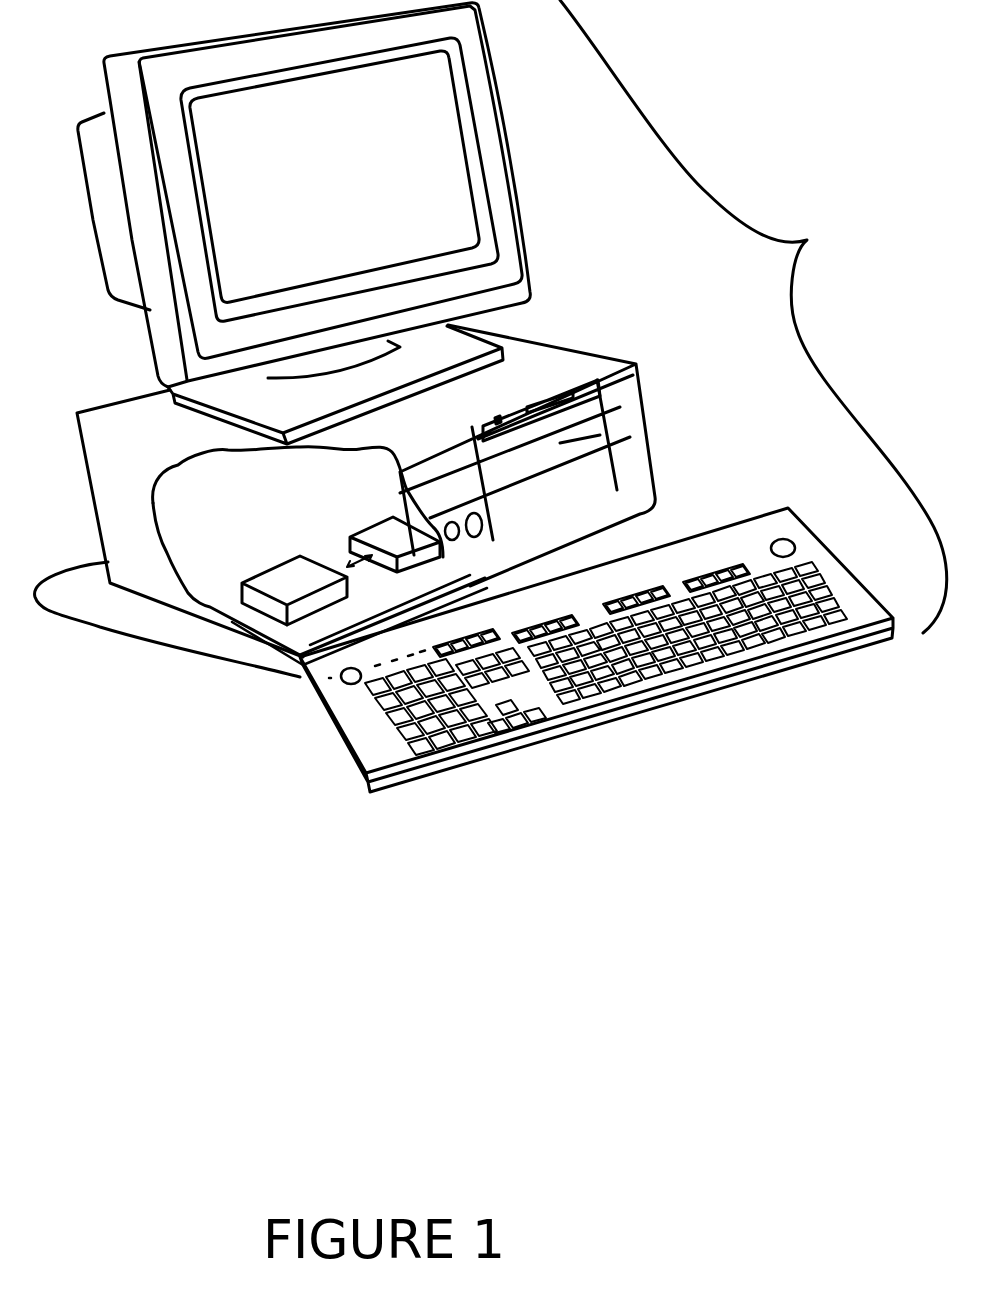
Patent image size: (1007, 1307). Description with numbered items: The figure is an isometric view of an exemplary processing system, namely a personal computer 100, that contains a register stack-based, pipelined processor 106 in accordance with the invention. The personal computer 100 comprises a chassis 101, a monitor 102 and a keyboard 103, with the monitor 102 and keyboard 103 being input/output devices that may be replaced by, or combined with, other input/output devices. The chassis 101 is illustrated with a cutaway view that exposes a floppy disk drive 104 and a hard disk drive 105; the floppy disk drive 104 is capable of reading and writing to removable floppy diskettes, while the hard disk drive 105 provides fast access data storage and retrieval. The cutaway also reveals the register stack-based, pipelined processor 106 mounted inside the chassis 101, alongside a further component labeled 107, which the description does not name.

The personal computer 100 is at (753, 316).
The chassis 101 is at (623, 356).
The monitor 102 is at (143, 328).
The keyboard 103 is at (797, 520).
The floppy disk drive 104 is at (597, 402).
The hard disk drive 105 is at (560, 443).
The register stack-based, pipelined processor 106 is at (367, 537).
The memory 107 is at (275, 574).